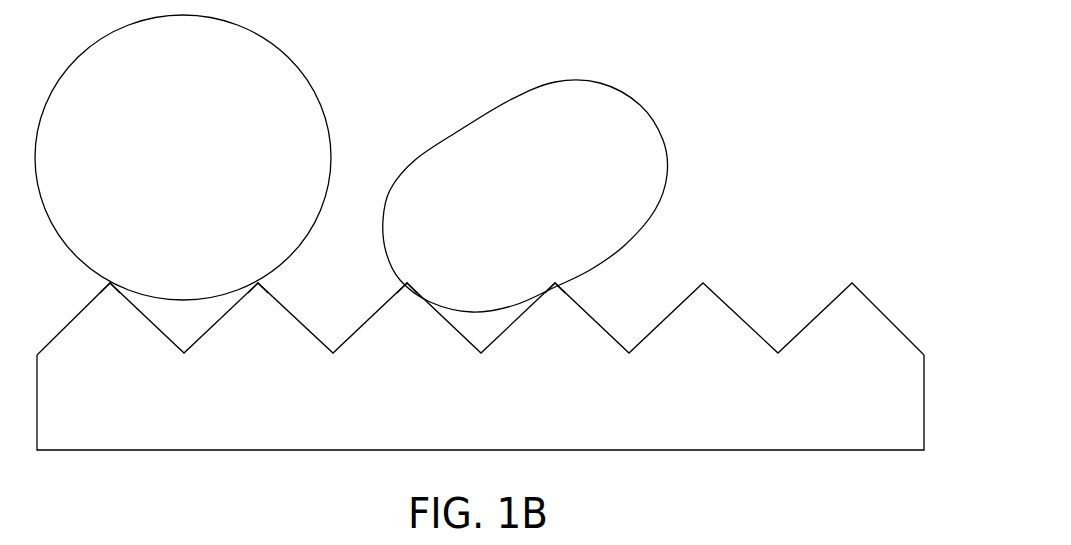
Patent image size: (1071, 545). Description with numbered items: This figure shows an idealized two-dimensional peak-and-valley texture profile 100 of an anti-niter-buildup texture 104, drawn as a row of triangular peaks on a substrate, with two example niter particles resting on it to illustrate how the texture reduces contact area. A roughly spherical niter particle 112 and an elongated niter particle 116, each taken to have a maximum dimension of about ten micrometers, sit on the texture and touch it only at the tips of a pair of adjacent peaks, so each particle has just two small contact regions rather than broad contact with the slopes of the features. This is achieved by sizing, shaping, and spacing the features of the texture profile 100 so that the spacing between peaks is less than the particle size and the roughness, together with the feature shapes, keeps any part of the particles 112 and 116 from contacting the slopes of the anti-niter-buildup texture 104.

The texture profile 100 is at (492, 283).
The anti-niter-buildup texture 104 is at (677, 275).
The niter particle 112 is at (273, 70).
The niter particle 116 is at (588, 100).